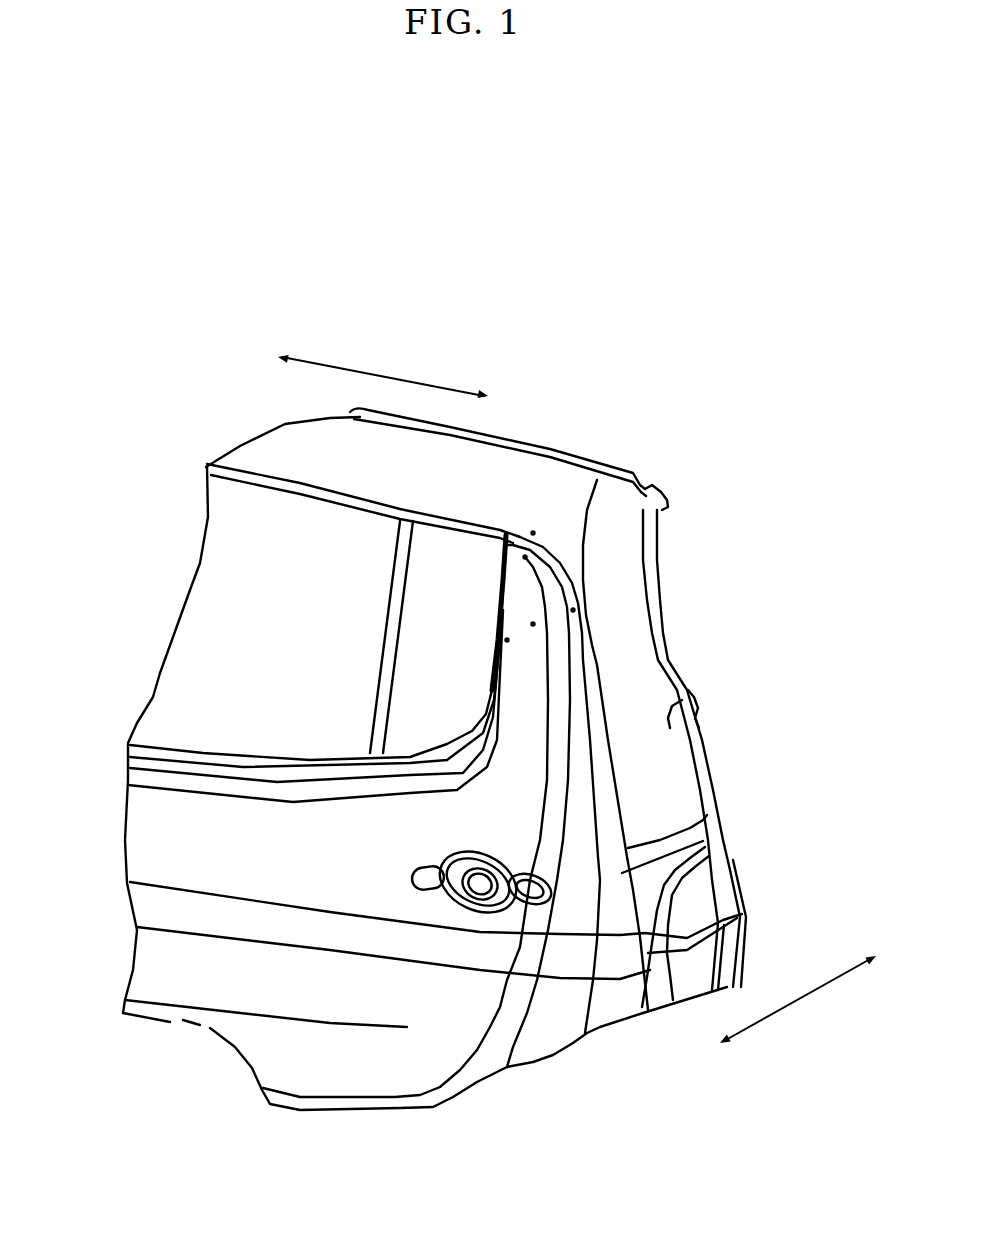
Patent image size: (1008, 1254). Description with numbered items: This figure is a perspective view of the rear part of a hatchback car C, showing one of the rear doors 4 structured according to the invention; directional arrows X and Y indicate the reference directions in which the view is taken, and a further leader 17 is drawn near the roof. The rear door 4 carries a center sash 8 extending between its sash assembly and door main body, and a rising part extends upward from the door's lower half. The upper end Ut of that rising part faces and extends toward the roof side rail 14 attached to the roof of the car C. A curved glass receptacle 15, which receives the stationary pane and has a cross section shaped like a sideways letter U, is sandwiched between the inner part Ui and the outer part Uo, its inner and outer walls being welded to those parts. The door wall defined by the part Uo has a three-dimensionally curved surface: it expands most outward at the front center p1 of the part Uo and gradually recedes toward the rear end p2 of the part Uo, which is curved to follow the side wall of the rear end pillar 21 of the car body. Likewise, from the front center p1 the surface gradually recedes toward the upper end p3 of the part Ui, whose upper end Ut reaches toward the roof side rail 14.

The rear door 4 is at (114, 922).
The center sash 8 is at (382, 655).
The roof side rail 14 is at (402, 487).
The glass receptacle 15 is at (516, 738).
The roof side rail 17 is at (321, 500).
The rear end pillar 21 is at (697, 692).
The front center p1 is at (507, 640).
The rear end p2 is at (572, 608).
The upper end p3 is at (533, 533).
The upper end Ut is at (518, 562).
The part Uo is at (533, 624).
The car C is at (727, 540).
The vehicle longitudinal direction X is at (433, 383).
The vehicle width direction Y is at (810, 988).